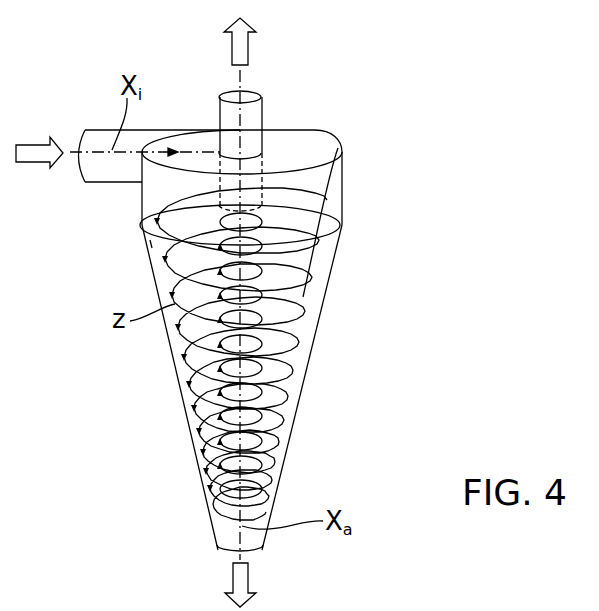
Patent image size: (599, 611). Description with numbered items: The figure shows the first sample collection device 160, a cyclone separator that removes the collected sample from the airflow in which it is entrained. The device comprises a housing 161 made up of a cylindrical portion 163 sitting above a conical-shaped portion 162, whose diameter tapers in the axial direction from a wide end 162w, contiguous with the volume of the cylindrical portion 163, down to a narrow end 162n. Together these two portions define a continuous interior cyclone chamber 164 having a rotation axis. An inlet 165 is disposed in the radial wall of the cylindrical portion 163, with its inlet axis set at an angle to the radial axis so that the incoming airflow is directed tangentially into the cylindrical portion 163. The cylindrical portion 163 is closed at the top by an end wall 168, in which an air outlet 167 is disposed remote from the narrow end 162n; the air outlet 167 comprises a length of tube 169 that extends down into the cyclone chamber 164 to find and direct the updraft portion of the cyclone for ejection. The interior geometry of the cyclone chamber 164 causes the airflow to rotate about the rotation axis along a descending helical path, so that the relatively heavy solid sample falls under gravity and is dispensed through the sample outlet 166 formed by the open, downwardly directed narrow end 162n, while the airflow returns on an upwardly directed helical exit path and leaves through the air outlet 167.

The first sample collection device 160 is at (388, 171).
The housing 161 is at (326, 305).
The conical-shaped portion 162 is at (178, 379).
The wide end 162w is at (150, 243).
The narrow end 162n is at (217, 545).
The cylindrical portion 163 is at (138, 190).
The cyclone chamber 164 is at (330, 212).
The inlet 165 is at (87, 128).
The sample outlet 166 is at (262, 548).
The air outlet 167 is at (262, 120).
The end wall 168 is at (310, 148).
The length of tube 169 is at (338, 148).